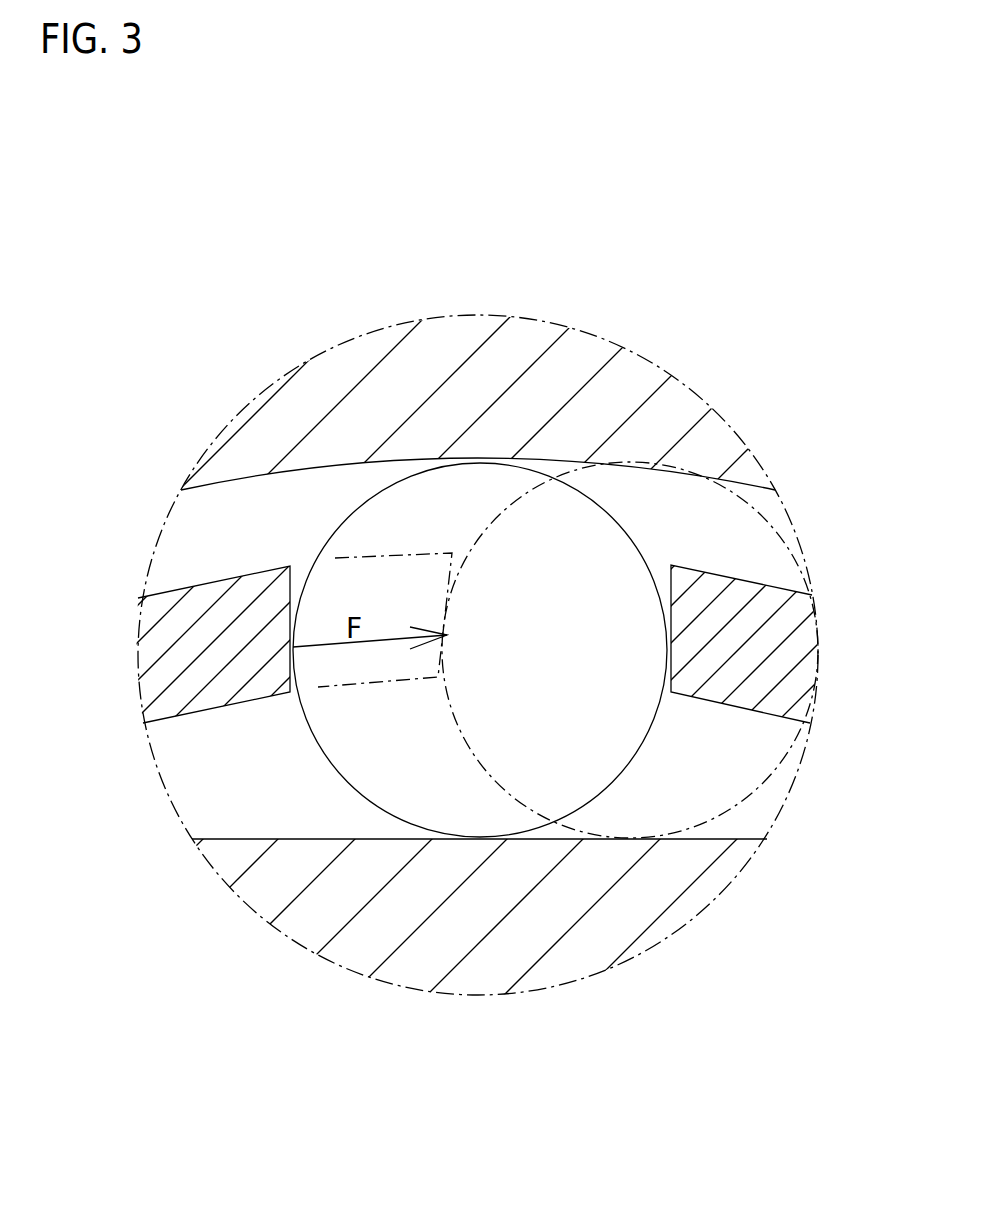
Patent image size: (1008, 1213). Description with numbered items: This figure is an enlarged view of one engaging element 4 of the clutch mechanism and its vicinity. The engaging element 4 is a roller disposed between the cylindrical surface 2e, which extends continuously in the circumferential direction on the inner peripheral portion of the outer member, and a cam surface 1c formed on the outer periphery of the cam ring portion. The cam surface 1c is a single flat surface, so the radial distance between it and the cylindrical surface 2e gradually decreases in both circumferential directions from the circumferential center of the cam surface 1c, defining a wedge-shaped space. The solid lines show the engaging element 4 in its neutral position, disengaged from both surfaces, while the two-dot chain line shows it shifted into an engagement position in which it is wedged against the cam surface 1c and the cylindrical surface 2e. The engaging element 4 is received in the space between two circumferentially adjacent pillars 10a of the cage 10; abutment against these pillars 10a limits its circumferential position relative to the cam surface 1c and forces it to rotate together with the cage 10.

The cylindrical surface 2e is at (627, 470).
The cage 10 is at (713, 567).
The pillar 10a is at (192, 617).
The engaging element 4 is at (603, 716).
The cam surface 1c is at (648, 838).